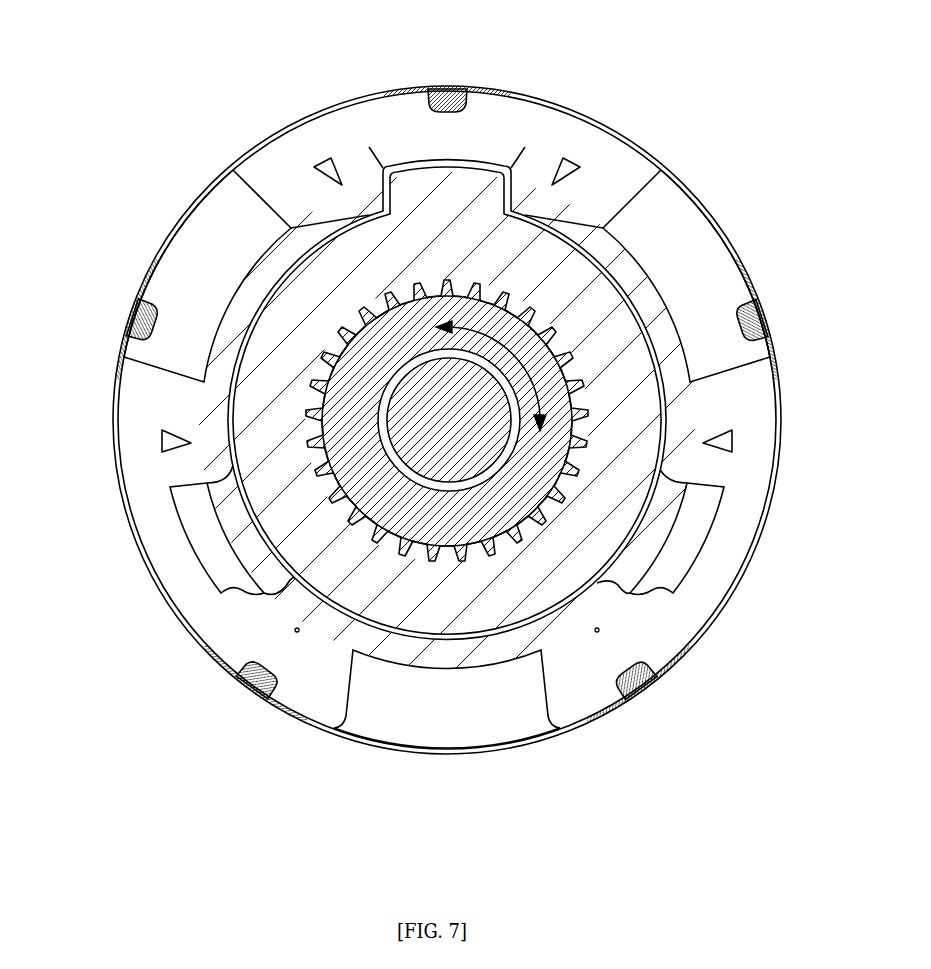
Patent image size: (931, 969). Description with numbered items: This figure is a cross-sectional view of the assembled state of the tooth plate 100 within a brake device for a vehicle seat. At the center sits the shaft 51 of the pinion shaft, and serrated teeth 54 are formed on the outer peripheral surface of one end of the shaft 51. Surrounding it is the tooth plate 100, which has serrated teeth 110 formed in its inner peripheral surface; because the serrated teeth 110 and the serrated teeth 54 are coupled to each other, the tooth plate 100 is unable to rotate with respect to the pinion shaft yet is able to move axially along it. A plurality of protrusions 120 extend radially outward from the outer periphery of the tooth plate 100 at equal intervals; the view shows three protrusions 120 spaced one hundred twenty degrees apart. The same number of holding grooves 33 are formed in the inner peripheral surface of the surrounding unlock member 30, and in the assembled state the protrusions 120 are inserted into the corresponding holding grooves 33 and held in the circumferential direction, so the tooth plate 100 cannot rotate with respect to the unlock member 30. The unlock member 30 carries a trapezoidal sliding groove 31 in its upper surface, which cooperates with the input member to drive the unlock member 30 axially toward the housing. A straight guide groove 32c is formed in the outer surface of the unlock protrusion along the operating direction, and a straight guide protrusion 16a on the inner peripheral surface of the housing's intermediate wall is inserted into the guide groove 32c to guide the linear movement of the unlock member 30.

The unlock member 30 is at (374, 113).
The guide protrusion 16a is at (447, 88).
The guide groove 32c is at (484, 90).
The sliding groove 31 is at (228, 220).
The shaft 51 is at (318, 395).
The serrated teeth 54 is at (350, 453).
The holding grooves 33 is at (203, 513).
The protrusions 120 is at (280, 557).
The serrated teeth 110 is at (383, 548).
The tooth plate 100 is at (485, 606).